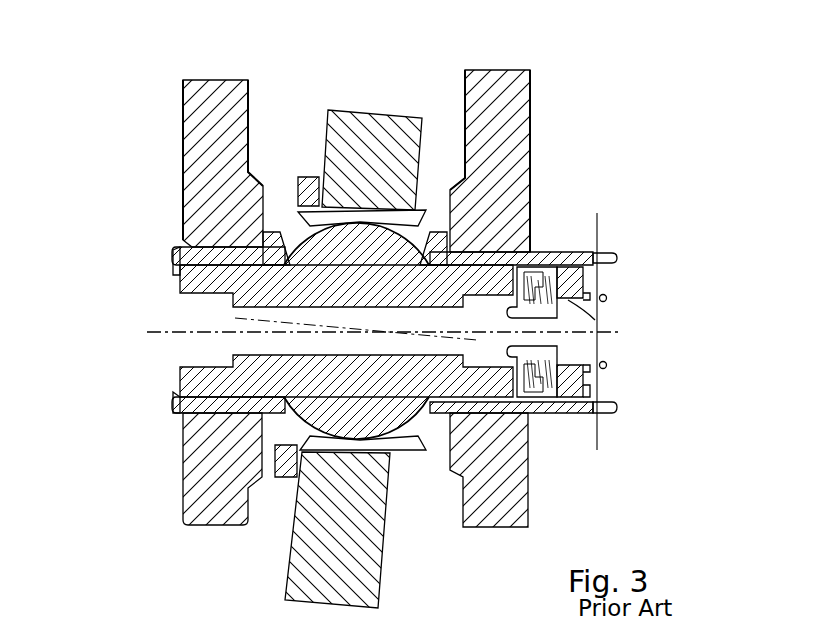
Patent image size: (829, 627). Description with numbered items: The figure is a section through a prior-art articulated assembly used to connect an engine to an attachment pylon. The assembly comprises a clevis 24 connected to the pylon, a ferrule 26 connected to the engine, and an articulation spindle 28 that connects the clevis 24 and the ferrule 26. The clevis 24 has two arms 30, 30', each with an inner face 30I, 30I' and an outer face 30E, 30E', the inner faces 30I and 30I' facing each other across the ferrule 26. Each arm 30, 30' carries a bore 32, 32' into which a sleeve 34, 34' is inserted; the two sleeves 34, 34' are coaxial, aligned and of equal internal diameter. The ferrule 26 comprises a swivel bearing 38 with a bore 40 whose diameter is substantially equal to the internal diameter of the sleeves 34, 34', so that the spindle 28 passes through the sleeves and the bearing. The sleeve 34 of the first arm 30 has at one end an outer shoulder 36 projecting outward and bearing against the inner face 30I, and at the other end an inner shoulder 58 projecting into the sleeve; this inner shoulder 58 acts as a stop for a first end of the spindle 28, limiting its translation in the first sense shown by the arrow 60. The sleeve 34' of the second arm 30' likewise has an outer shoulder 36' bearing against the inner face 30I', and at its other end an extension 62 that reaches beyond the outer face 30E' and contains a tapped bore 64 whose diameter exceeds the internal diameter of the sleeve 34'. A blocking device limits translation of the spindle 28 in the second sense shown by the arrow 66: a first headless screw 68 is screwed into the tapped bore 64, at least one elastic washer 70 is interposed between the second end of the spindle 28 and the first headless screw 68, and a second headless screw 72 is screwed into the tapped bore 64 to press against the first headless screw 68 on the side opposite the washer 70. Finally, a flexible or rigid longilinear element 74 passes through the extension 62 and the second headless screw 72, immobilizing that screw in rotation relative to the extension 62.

The clevis 24 is at (560, 112).
The ferrule 26 is at (378, 578).
The articulation spindle 28 is at (280, 383).
The first arm 30 is at (223, 129).
The outer face of first arm 30E is at (140, 156).
The inner face of first arm 30I is at (274, 114).
The second arm 30' is at (490, 126).
The outer face of second arm 30E' is at (582, 146).
The inner face of second arm 30I' is at (453, 99).
The bore of first arm 32 is at (199, 223).
The bore of second arm 32' is at (514, 201).
The first sleeve 34 is at (196, 429).
The second sleeve 34' is at (523, 486).
The outer shoulder of first sleeve 36 is at (186, 503).
The outer shoulder of second sleeve 36' is at (475, 470).
The swivel bearing 38 is at (357, 210).
The bore of swivel bearing 40 is at (388, 265).
The inner shoulder 58 is at (175, 398).
The arrow indicating first sense 60 is at (148, 316).
The extension 62 is at (571, 412).
The tapped bore 64 is at (605, 278).
The arrow indicating second sense 66 is at (692, 353).
The first headless screw 68 is at (565, 357).
The elastic washer 70 is at (537, 410).
The second headless screw 72 is at (600, 316).
The longilinear element 74 is at (605, 290).